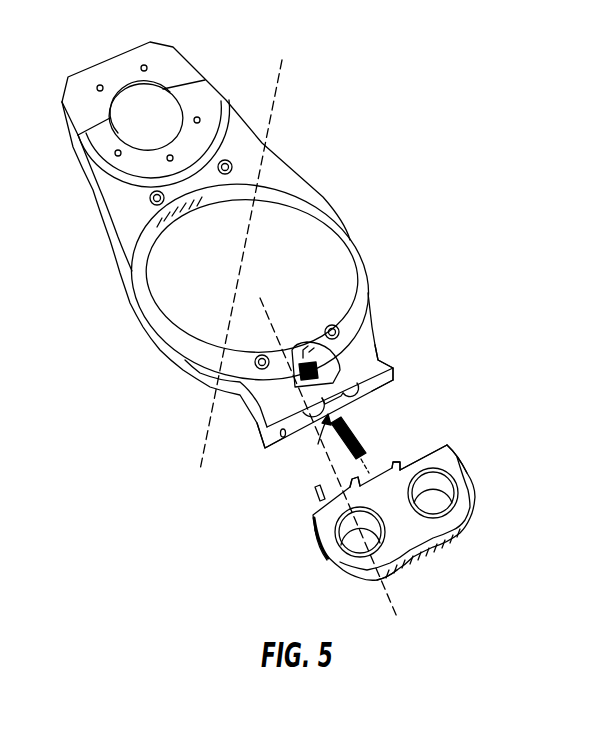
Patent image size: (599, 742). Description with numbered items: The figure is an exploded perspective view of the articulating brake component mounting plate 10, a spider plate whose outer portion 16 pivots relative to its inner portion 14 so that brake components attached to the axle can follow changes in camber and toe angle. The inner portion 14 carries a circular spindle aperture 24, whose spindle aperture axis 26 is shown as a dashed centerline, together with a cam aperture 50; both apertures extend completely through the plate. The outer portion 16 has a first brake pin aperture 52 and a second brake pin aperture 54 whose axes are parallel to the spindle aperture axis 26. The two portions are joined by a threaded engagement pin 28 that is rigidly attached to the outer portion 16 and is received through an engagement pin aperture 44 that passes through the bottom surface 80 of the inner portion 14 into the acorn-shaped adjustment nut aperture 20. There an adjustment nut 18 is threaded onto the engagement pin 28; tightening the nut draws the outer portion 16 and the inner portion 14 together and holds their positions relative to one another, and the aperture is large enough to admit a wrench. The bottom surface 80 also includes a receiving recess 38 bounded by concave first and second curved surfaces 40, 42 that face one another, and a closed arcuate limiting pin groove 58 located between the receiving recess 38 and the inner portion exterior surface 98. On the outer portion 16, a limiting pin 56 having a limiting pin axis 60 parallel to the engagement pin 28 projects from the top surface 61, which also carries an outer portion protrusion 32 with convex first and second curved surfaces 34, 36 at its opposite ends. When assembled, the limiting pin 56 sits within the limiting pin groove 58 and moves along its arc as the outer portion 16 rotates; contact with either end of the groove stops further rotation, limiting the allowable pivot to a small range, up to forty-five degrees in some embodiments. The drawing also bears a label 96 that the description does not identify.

The articulating brake component mounting plate 10 is at (446, 78).
The inner portion 14 is at (160, 335).
The outer portion 16 is at (443, 457).
The adjustment nut 18 is at (262, 356).
The adjustment nut aperture 20 is at (293, 347).
The spindle aperture 24 is at (165, 275).
The spindle aperture axis 26 is at (278, 94).
The engagement pin 28 is at (356, 433).
The outer portion protrusion 32 is at (401, 460).
The first curved surface 34 is at (352, 487).
The second curved surface 36 is at (439, 438).
The receiving recess 38 is at (317, 441).
The first curved surface 40 is at (305, 427).
The second curved surface 42 is at (397, 384).
The engagement pin aperture 44 is at (377, 377).
The cam aperture 50 is at (130, 108).
The first brake pin aperture 52 is at (362, 537).
The second brake pin aperture 54 is at (435, 493).
The limiting pin 56 is at (314, 494).
The limiting pin groove 58 is at (262, 442).
The limiting pin axis 60 is at (386, 593).
The top surface 61 is at (441, 431).
The bottom surface 80 is at (375, 392).
The edge surface 96 is at (330, 567).
The inner portion exterior surface 98 is at (193, 362).